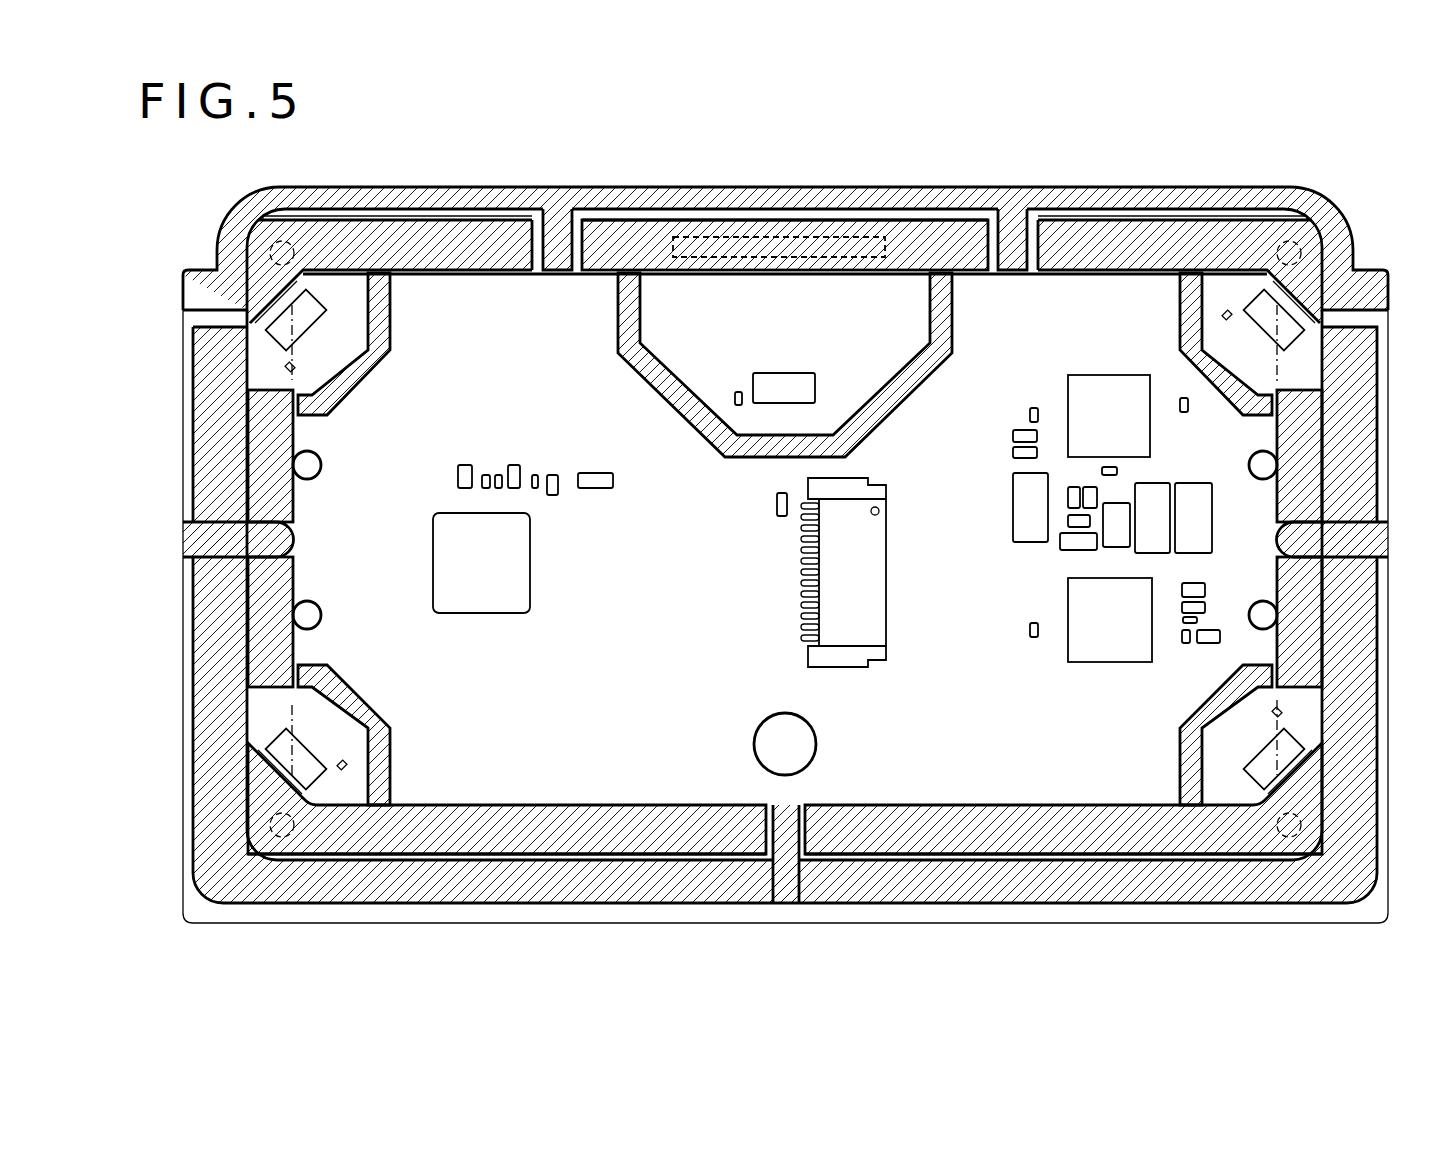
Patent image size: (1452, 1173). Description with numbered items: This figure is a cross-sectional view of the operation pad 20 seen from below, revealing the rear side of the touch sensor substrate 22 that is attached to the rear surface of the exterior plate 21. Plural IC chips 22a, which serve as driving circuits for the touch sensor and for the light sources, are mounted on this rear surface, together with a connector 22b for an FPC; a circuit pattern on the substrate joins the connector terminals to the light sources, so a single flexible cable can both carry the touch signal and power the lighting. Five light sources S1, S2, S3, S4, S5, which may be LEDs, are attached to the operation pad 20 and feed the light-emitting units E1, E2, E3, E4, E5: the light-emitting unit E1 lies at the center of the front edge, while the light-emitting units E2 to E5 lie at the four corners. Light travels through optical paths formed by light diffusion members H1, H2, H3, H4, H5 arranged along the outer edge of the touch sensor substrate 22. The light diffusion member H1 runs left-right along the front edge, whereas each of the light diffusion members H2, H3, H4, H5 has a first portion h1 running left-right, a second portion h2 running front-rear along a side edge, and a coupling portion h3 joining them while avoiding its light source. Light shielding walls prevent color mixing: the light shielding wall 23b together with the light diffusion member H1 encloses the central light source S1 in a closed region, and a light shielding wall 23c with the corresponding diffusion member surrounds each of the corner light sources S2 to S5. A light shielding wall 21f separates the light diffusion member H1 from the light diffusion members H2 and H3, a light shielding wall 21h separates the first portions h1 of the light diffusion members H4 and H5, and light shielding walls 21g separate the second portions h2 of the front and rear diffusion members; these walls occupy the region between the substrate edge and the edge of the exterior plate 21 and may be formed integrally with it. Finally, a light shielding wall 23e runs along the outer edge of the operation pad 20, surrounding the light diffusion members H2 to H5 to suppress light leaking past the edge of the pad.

The operation pad 20 is at (1134, 174).
The exterior plate 21 is at (913, 190).
The light shielding wall 21f is at (580, 227).
The light shielding walls 21g is at (190, 537).
The light shielding wall 21h is at (787, 885).
The touch sensor substrate 22 is at (993, 283).
The IC chips 22a is at (522, 568).
The connector 22b is at (880, 588).
The light shielding wall 23b is at (687, 405).
The light shielding wall 23c is at (383, 307).
The light shielding wall 23e is at (203, 497).
The light-emitting unit E1 is at (850, 235).
The light-emitting unit E2 is at (270, 249).
The light-emitting unit E3 is at (1301, 252).
The light-emitting unit E4 is at (1282, 838).
The light-emitting unit E5 is at (272, 838).
The light diffusion member H1 is at (633, 230).
The light diffusion member H2 is at (355, 217).
The light diffusion member H3 is at (1167, 220).
The light diffusion member H4 is at (1040, 858).
The light diffusion member H5 is at (550, 855).
The first portion h1 is at (507, 230).
The second portion h2 is at (258, 445).
The coupling portion h3 is at (248, 383).
The light source S1 is at (767, 400).
The light source S2 is at (305, 320).
The light source S3 is at (1253, 313).
The light source S4 is at (1253, 765).
The light source S5 is at (303, 763).